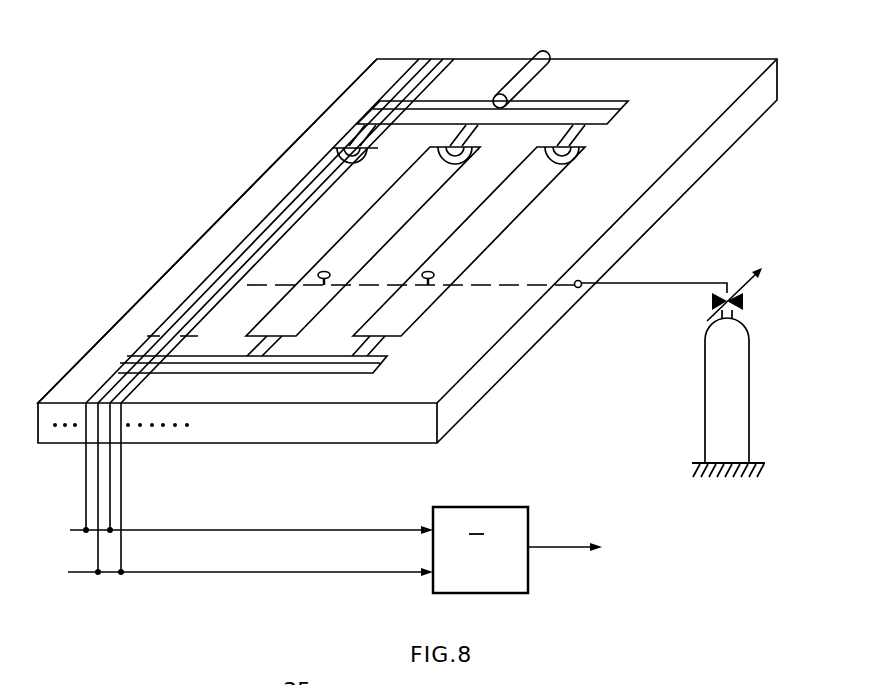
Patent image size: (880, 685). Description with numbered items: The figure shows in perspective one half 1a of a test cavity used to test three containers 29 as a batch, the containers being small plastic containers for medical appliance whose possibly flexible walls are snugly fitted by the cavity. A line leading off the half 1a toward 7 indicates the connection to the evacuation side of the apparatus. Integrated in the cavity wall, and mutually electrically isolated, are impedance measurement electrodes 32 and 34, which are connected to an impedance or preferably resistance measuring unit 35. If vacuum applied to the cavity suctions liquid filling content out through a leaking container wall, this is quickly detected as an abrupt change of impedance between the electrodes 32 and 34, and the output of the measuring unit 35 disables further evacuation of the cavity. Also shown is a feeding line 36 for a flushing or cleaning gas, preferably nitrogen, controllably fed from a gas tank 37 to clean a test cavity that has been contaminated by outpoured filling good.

The half of test cavity 1a is at (672, 193).
The containers 29 is at (490, 224).
The pump (to 7) 7 is at (547, 50).
The gas supply line 36 is at (525, 285).
The gas tank 37 is at (732, 370).
The impedance measurement electrode 32 is at (80, 444).
The impedance measurement electrode 34 is at (130, 446).
The impedance measuring unit 35 is at (479, 505).